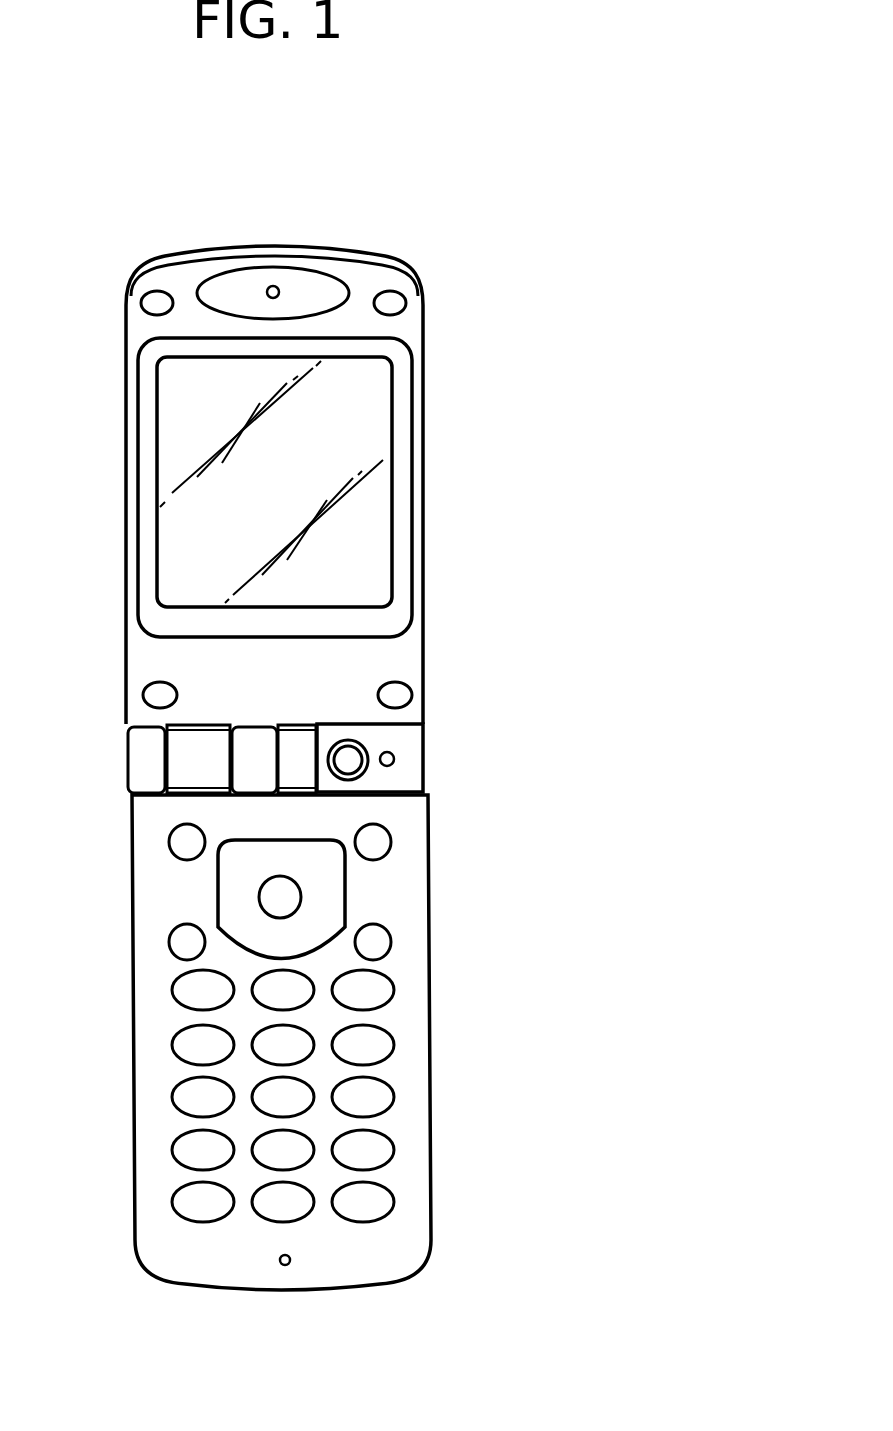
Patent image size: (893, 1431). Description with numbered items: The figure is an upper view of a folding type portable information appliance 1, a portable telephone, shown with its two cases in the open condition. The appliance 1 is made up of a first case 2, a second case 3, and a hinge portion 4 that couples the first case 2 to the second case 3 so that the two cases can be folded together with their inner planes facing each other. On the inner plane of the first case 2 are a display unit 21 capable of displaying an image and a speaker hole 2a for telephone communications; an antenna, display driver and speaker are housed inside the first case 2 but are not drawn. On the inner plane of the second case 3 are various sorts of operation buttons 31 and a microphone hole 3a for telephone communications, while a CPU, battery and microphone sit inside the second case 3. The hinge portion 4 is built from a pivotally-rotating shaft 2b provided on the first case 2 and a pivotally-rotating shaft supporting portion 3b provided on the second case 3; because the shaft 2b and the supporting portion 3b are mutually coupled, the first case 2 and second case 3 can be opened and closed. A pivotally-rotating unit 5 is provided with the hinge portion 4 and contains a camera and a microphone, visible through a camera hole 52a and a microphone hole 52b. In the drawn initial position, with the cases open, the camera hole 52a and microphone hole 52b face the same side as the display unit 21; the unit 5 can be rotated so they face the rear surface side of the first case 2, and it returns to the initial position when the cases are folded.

The folding type portable information appliance 1 is at (284, 149).
The first case 2 is at (428, 647).
The speaker hole 2a is at (273, 286).
The pivotally-rotating shaft 2b is at (207, 728).
The display unit 21 is at (383, 527).
The second case 3 is at (430, 903).
The microphone hole 3a is at (283, 1266).
The pivotally-rotating shaft supporting portion 3b is at (137, 768).
The operation buttons 31 is at (330, 887).
The hinge portion 4 is at (428, 743).
The pivotally-rotating unit 5 is at (410, 738).
The camera hole 52a is at (360, 776).
The microphone hole 52b is at (394, 759).